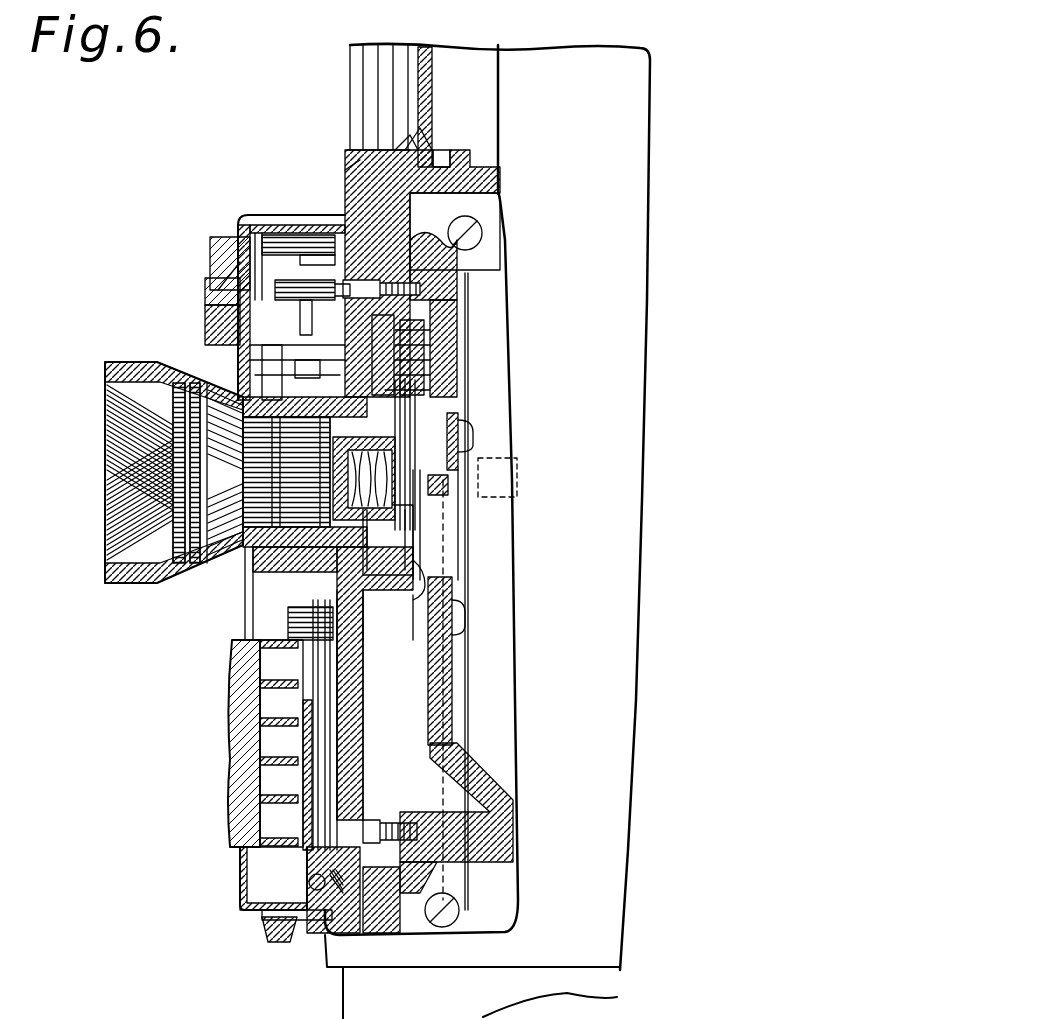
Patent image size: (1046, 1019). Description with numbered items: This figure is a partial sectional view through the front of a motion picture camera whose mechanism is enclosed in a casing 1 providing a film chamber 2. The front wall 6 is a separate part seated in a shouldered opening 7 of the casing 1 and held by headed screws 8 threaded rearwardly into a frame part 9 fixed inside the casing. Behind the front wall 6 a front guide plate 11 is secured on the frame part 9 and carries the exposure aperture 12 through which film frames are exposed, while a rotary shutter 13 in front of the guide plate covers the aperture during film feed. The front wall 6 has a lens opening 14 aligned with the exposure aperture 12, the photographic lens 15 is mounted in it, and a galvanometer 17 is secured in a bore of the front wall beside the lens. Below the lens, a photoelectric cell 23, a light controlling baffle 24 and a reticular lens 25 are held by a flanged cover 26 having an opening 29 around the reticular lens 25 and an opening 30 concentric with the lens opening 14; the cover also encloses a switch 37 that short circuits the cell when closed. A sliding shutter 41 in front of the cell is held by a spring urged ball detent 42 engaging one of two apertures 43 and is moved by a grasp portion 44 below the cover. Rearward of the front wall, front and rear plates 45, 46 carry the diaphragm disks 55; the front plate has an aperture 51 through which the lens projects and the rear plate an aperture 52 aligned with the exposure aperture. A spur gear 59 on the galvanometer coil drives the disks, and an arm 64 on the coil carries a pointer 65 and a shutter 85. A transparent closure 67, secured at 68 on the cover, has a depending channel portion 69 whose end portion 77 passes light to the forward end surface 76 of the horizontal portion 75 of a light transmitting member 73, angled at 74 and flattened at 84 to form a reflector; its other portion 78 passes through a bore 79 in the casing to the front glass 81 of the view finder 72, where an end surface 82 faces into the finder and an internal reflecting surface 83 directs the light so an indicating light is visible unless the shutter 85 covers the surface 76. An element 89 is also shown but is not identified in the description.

The casing 1 is at (639, 190).
The film chamber 2 is at (511, 615).
The front wall 6 is at (358, 691).
The shouldered opening 7 is at (351, 204).
The headed screws 8 is at (464, 286).
The frame part 9 is at (454, 750).
The front guide plate 11 is at (461, 413).
The exposure aperture 12 is at (466, 505).
The rotary shutter 13 is at (461, 565).
The lens opening 14 is at (356, 522).
The photographic lens 15 is at (361, 495).
The galvanometer 17 is at (246, 353).
The photoelectric cell 23 is at (326, 745).
The light controlling baffle 24 is at (276, 658).
The reticular lens 25 is at (236, 722).
The flanged cover 26 is at (246, 888).
The opening 29 is at (244, 843).
The opening 30 is at (246, 573).
The switch 37 is at (261, 380).
The shutter 41 is at (311, 786).
The spring urged ball detent 42 is at (316, 920).
The apertures 43 is at (311, 890).
The grasp portion 44 is at (276, 930).
The front plate 45 is at (389, 540).
The rear plate 46 is at (424, 596).
The aperture 51 is at (388, 540).
The aperture 52 is at (436, 527).
The diaphragm disks 55 is at (424, 394).
The spur gear 59 is at (426, 388).
The arm 64 is at (316, 268).
The pointer 65 is at (264, 228).
The closure 67 is at (236, 229).
The securing point 68 is at (291, 220).
The depending portion 69 is at (221, 268).
The view finder 72 is at (478, 70).
The light transmitting member 73 is at (401, 193).
The angle 74 is at (336, 236).
The portion 75 is at (318, 308).
The forward end surface 76 is at (268, 290).
The end portion 77 is at (226, 298).
The portion 78 is at (455, 246).
The bore 79 is at (351, 178).
The front glass 81 is at (426, 136).
The end surface 82 is at (446, 145).
The internal reflecting surface 83 is at (411, 136).
The flattened reflecting surface 84 is at (338, 375).
The shutter 85 is at (276, 233).
The block 89 is at (206, 328).